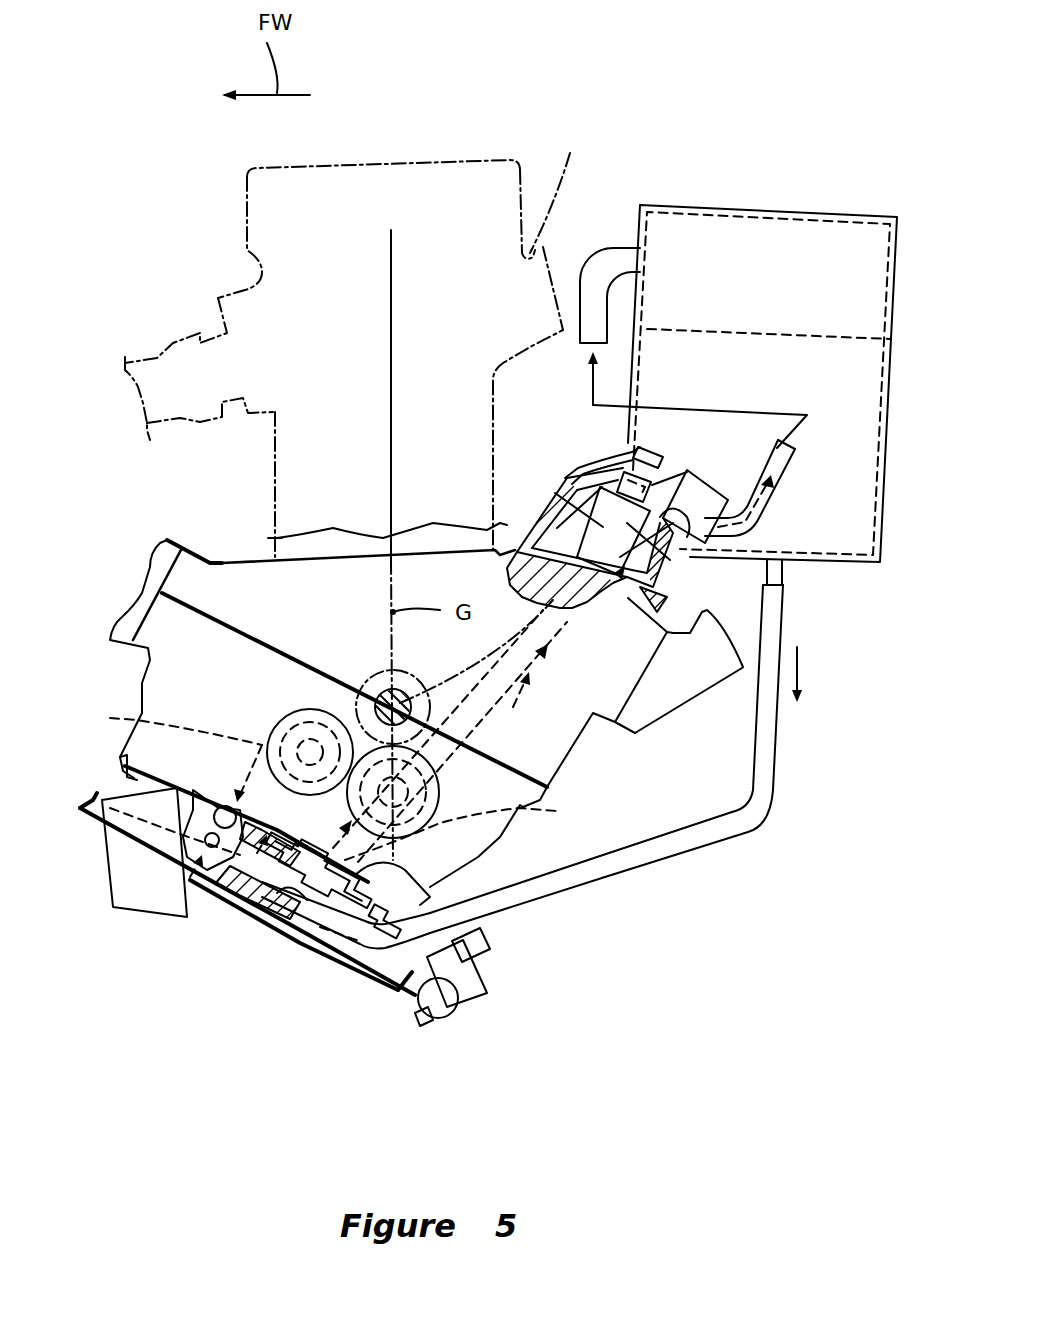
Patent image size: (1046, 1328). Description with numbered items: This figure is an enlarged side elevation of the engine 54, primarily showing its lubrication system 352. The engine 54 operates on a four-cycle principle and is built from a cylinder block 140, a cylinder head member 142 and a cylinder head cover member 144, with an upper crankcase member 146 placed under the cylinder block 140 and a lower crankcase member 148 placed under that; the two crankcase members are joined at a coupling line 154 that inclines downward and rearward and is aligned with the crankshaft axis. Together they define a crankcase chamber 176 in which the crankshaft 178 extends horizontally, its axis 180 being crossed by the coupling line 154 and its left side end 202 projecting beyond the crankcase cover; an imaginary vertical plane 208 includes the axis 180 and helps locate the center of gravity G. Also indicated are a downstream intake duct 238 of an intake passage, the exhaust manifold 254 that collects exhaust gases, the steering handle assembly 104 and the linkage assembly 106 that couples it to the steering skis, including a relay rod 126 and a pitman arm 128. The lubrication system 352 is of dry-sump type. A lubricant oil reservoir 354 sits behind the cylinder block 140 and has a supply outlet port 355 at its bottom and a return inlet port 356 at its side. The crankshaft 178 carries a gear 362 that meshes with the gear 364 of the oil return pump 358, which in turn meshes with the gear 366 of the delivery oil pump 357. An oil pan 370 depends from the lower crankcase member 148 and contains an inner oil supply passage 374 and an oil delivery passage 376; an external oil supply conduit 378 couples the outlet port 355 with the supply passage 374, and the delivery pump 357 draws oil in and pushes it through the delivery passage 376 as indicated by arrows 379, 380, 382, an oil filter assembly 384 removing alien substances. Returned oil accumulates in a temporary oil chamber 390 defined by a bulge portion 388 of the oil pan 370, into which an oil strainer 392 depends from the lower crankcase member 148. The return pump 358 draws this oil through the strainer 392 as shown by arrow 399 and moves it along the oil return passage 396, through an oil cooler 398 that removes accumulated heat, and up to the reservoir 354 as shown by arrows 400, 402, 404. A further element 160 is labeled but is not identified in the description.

The engine 54 is at (390, 128).
The steering handle assembly 104 is at (493, 973).
The linkage assembly 106 is at (480, 947).
The relay rod 126 is at (360, 967).
The pitman arm 128 is at (483, 997).
The cylinder block 140 is at (273, 510).
The cylinder head member 142 is at (243, 248).
The cylinder head cover member 144 is at (247, 177).
The upper crankcase member 146 is at (448, 570).
The lower crankcase member 148 is at (227, 660).
The coupling line 154 is at (287, 647).
The outer wall 160 is at (170, 547).
The crankcase chamber 176 is at (175, 640).
The crankshaft 178 is at (378, 685).
The axis 180 is at (423, 717).
The left side end 202 is at (372, 710).
The imaginary vertical plane 208 is at (393, 320).
The downstream intake duct 238 is at (544, 337).
The exhaust manifold 254 is at (140, 358).
The lubrication system 352 is at (170, 1040).
The lubricant oil reservoir 354 is at (817, 233).
The supply outlet port 355 is at (705, 407).
The return inlet port 356 is at (617, 240).
The delivery oil pump 357 is at (163, 779).
The oil return pump 358 is at (487, 854).
The gear 362 is at (433, 693).
The gear 364 is at (577, 845).
The gear 366 is at (277, 717).
The oil pan 370 is at (170, 917).
The inner oil supply passage 374 is at (277, 917).
The oil delivery passage 376 is at (177, 830).
The external oil supply conduit 378 is at (723, 830).
The arrow 379 is at (797, 670).
The arrow 380 is at (331, 871).
The arrow 382 is at (260, 777).
The oil filter assembly 384 is at (203, 923).
The bulge portion 388 is at (287, 917).
The temporary oil chamber 390 is at (463, 900).
The oil strainer 392 is at (317, 910).
The oil return passage 396 is at (563, 680).
The oil cooler 398 is at (553, 483).
The arrow 399 is at (410, 837).
The arrow 400 is at (523, 690).
The arrow 402 is at (643, 587).
The arrow 404 is at (757, 500).